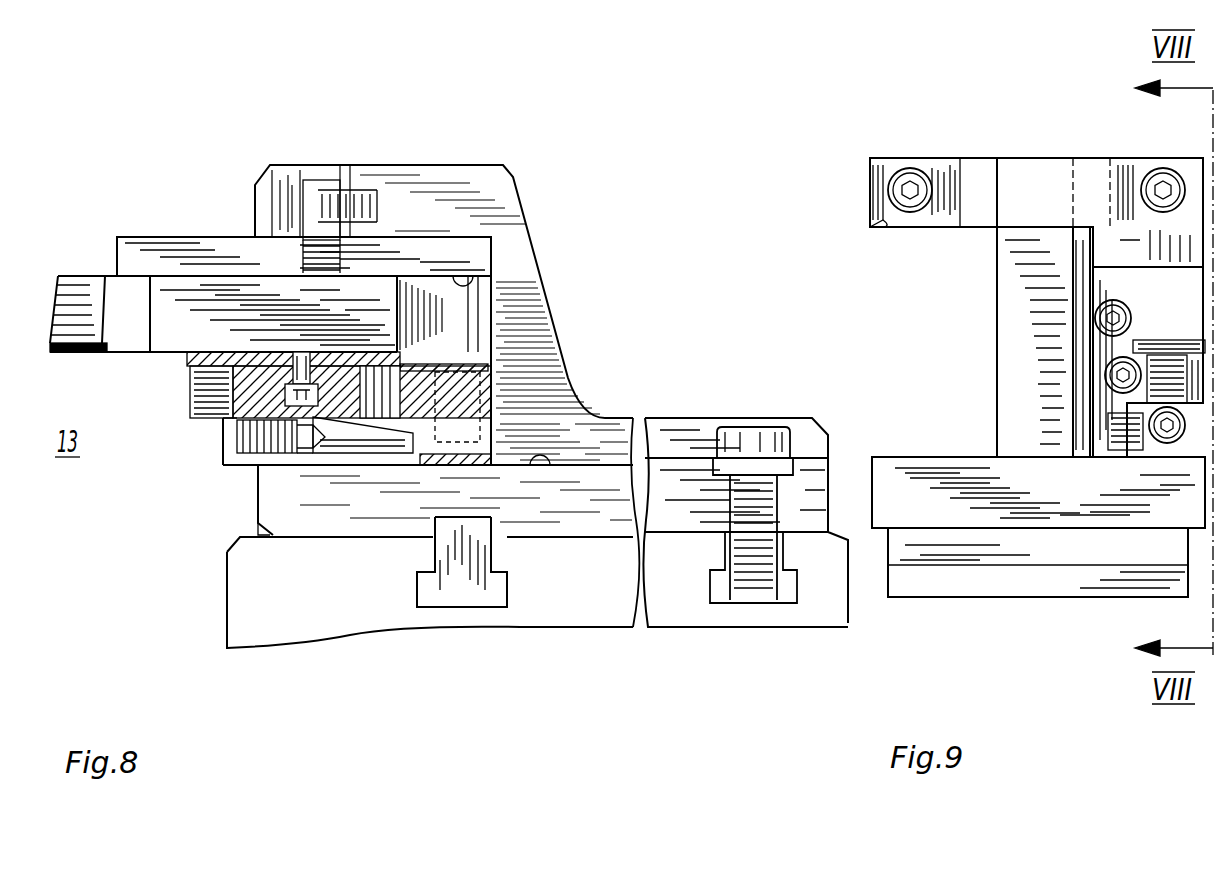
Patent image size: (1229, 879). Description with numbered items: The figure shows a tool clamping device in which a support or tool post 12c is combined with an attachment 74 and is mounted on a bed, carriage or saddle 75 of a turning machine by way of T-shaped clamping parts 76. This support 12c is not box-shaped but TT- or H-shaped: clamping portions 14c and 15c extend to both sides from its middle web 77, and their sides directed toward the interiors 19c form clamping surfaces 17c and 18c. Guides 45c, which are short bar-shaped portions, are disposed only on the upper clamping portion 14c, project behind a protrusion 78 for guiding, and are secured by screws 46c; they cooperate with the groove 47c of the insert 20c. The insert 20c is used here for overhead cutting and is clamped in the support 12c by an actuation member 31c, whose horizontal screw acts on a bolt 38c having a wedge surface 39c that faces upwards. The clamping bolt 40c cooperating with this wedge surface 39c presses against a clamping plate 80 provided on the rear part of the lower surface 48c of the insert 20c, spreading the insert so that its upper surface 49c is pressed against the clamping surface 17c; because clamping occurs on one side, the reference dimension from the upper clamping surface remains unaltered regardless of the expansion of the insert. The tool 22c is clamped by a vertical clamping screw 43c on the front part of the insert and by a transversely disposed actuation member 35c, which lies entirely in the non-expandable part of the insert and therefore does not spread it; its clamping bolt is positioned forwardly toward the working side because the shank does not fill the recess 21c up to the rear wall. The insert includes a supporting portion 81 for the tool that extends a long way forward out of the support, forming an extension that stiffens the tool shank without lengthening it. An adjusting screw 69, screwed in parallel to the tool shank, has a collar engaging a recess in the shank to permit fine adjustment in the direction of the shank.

In FIG. 8, the support or tool post 12c is at (535, 218).
In FIG. 9, the upper clamping portion 14c is at (995, 168).
In FIG. 9, the lower clamping portion 15c is at (1150, 487).
In FIG. 9, the clamping surface 17c is at (885, 225).
In FIG. 8, the clamping surface 18c is at (548, 455).
In FIG. 9, the clamping surface 18c is at (970, 457).
In FIG. 9, the interior 19c is at (907, 352).
In FIG. 9, the insert 20c is at (1080, 435).
In FIG. 8, the recess 21c is at (474, 290).
In FIG. 8, the tool 22c is at (90, 290).
In FIG. 8, the actuation member 31c is at (455, 358).
In FIG. 9, the actuation member 31c is at (1108, 373).
In FIG. 8, the actuation member 35c is at (335, 418).
In FIG. 8, the bolt 38c is at (465, 430).
In FIG. 8, the wedge surface 39c is at (500, 440).
In FIG. 8, the clamping bolt 40c is at (545, 452).
In FIG. 8, the vertical clamping screw 43c is at (202, 372).
In FIG. 9, the guides 45c is at (948, 172).
In FIG. 9, the screws 46c is at (898, 185).
In FIG. 8, the groove 47c is at (350, 258).
In FIG. 8, the lower surface 48c is at (390, 430).
In FIG. 8, the upper surface 49c is at (185, 240).
In FIG. 9, the adjusting screw 69 is at (1096, 320).
In FIG. 8, the attachment 74 is at (683, 440).
In FIG. 8, the bed, carriage or saddle 75 is at (343, 587).
In FIG. 8, the T-shaped clamping parts 76 is at (467, 590).
In FIG. 9, the middle web 77 is at (1000, 300).
In FIG. 9, the protrusion 78 is at (978, 168).
In FIG. 8, the clamping plate 80 is at (512, 305).
In FIG. 8, the supporting portion 81 is at (144, 250).